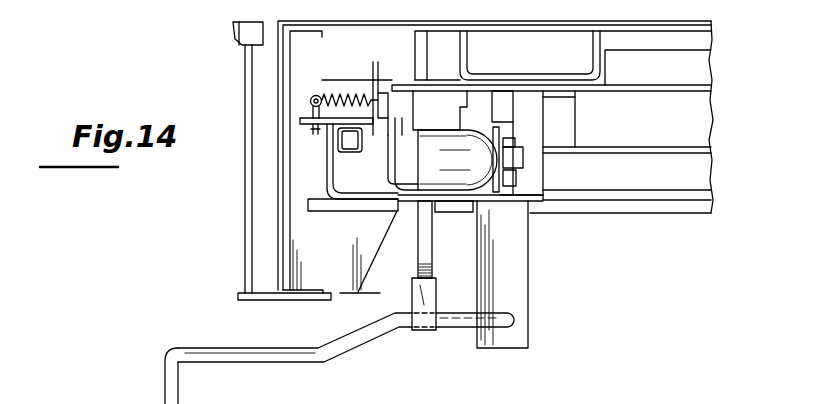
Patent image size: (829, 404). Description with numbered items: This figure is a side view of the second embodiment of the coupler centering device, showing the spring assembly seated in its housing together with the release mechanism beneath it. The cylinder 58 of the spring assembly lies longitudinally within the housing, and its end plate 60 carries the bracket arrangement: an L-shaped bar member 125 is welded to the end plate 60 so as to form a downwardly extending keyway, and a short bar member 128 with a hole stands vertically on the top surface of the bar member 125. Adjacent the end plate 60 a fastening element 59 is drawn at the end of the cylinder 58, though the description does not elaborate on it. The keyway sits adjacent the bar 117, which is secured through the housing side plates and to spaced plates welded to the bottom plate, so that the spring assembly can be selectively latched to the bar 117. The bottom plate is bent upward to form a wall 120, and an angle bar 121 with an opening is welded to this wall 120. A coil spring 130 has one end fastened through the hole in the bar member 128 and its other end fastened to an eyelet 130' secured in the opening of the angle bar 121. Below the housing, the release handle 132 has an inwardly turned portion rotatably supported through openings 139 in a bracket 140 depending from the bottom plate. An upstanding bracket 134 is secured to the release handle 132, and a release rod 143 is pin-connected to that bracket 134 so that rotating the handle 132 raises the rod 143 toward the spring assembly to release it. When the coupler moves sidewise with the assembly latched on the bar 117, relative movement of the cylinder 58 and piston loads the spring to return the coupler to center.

The cylinder 58 is at (458, 196).
The nut 59 is at (504, 188).
The end plate 60 is at (414, 134).
The bar 117 is at (421, 162).
The wall 120 is at (352, 200).
The angle bar 121 is at (331, 128).
The L-shaped bar member 125 is at (390, 150).
The short bar member 128 is at (380, 94).
The coil spring 130 is at (357, 84).
The eyelet 130' is at (308, 90).
The release handle 132 is at (224, 352).
The upstanding bracket 134 is at (423, 331).
The openings 139 is at (516, 318).
The bracket 140 is at (517, 264).
The release rod 143 is at (428, 251).